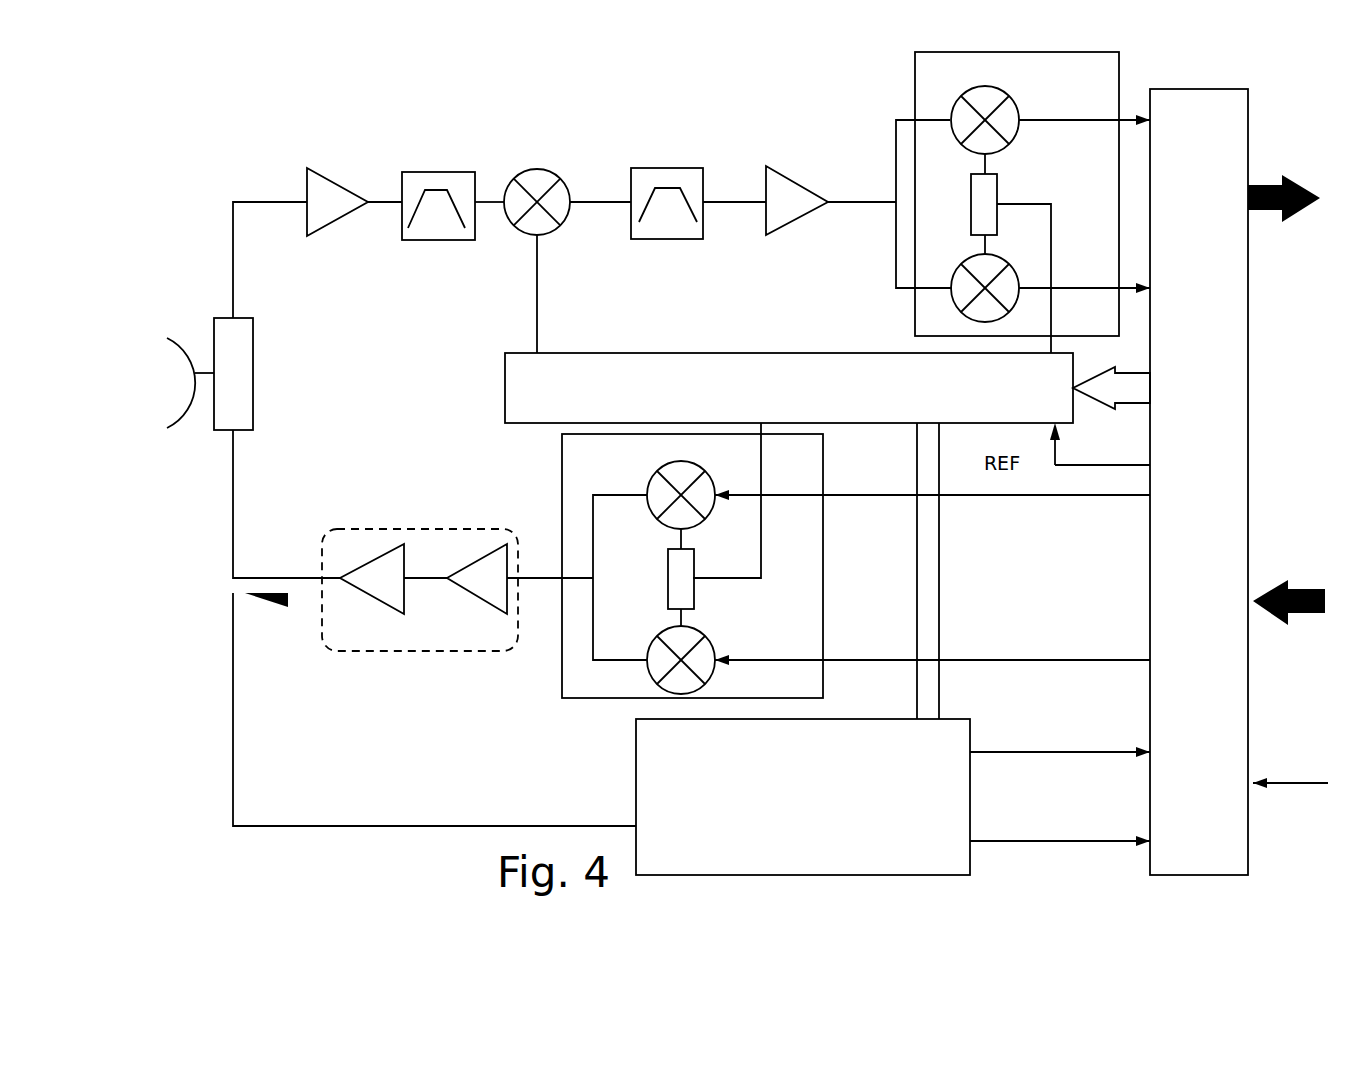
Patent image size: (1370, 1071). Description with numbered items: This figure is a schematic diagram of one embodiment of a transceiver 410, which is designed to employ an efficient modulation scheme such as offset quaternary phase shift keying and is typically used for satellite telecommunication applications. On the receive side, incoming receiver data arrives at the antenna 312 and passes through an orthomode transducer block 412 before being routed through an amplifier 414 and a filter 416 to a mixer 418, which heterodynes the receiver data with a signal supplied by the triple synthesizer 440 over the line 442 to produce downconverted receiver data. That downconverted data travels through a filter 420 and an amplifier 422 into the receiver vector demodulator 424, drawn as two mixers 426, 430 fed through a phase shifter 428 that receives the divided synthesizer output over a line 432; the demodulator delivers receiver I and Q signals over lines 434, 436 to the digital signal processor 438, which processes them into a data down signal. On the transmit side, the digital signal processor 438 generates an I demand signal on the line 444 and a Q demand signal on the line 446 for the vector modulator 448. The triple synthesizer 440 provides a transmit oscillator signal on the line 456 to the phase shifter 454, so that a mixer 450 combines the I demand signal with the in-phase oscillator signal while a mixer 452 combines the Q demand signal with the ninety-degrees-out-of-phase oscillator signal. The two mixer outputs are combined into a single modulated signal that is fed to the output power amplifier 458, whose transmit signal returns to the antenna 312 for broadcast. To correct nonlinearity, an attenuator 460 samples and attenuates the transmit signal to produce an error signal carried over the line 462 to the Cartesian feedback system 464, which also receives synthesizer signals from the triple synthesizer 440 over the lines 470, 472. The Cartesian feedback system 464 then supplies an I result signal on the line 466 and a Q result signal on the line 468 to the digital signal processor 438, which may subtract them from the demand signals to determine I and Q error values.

The antenna 312 is at (180, 348).
The transceiver 410 is at (385, 837).
The orthomode transducer (OMT) 412 is at (253, 373).
The amplifier 414 is at (334, 177).
The filter 416 is at (441, 172).
The mixer 418 is at (535, 170).
The filter 420 is at (665, 168).
The amplifier 422 is at (800, 181).
The receiver vector demodulator 424 is at (1058, 202).
The demodulator I mixer 426 is at (1008, 144).
The phase shifter 428 is at (968, 201).
The demodulator Q mixer 430 is at (957, 303).
The local oscillator line 432 is at (1053, 210).
The I output line 434 is at (1090, 122).
The Q output line 436 is at (1085, 287).
The digital signal processor 438 is at (1250, 97).
The triple synthesizer 440 is at (726, 353).
The line 442 is at (537, 290).
The line 444 is at (998, 497).
The line 446 is at (1012, 658).
The vector modulator 448 is at (735, 566).
The mixer 450 is at (651, 518).
The mixer 452 is at (658, 634).
The phase shifter 454 is at (697, 563).
The line 456 is at (761, 540).
The output power amplifier 458 is at (410, 529).
The attenuator 460 is at (250, 596).
The line 462 is at (321, 821).
The Cartesian feedback system 464 is at (634, 772).
The line 466 is at (1021, 751).
The line 468 is at (1026, 837).
The line 470 is at (939, 562).
The line 472 is at (917, 600).